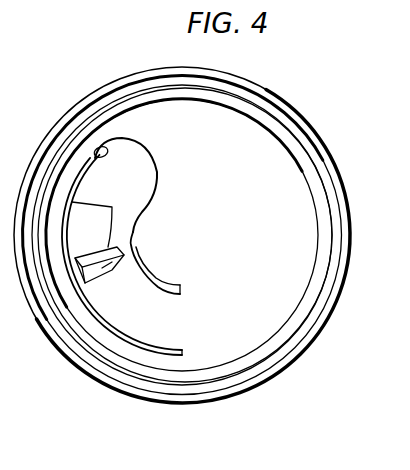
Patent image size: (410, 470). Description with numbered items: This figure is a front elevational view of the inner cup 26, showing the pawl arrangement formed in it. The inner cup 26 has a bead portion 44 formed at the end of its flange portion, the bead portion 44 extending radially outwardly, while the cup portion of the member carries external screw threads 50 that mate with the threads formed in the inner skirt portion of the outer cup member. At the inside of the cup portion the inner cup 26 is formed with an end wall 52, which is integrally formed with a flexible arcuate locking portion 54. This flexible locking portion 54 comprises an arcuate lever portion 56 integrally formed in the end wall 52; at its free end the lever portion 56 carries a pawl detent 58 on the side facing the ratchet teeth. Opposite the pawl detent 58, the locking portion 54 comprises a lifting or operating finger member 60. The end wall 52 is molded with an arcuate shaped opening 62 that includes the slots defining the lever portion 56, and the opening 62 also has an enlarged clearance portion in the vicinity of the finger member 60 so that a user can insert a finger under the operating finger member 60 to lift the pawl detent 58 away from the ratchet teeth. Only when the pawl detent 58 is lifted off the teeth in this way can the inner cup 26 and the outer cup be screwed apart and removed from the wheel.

The inner cup 26 is at (128, 72).
The bead portion 44 is at (182, 396).
The external screw threads 50 is at (242, 360).
The end wall 52 is at (252, 177).
The flexible arcuate locking portion 54 is at (91, 332).
The arcuate portion 56 is at (135, 325).
The pawl detent 58 is at (80, 282).
The operating finger member 60 is at (90, 218).
The arcuate shaped opening 62 is at (94, 150).